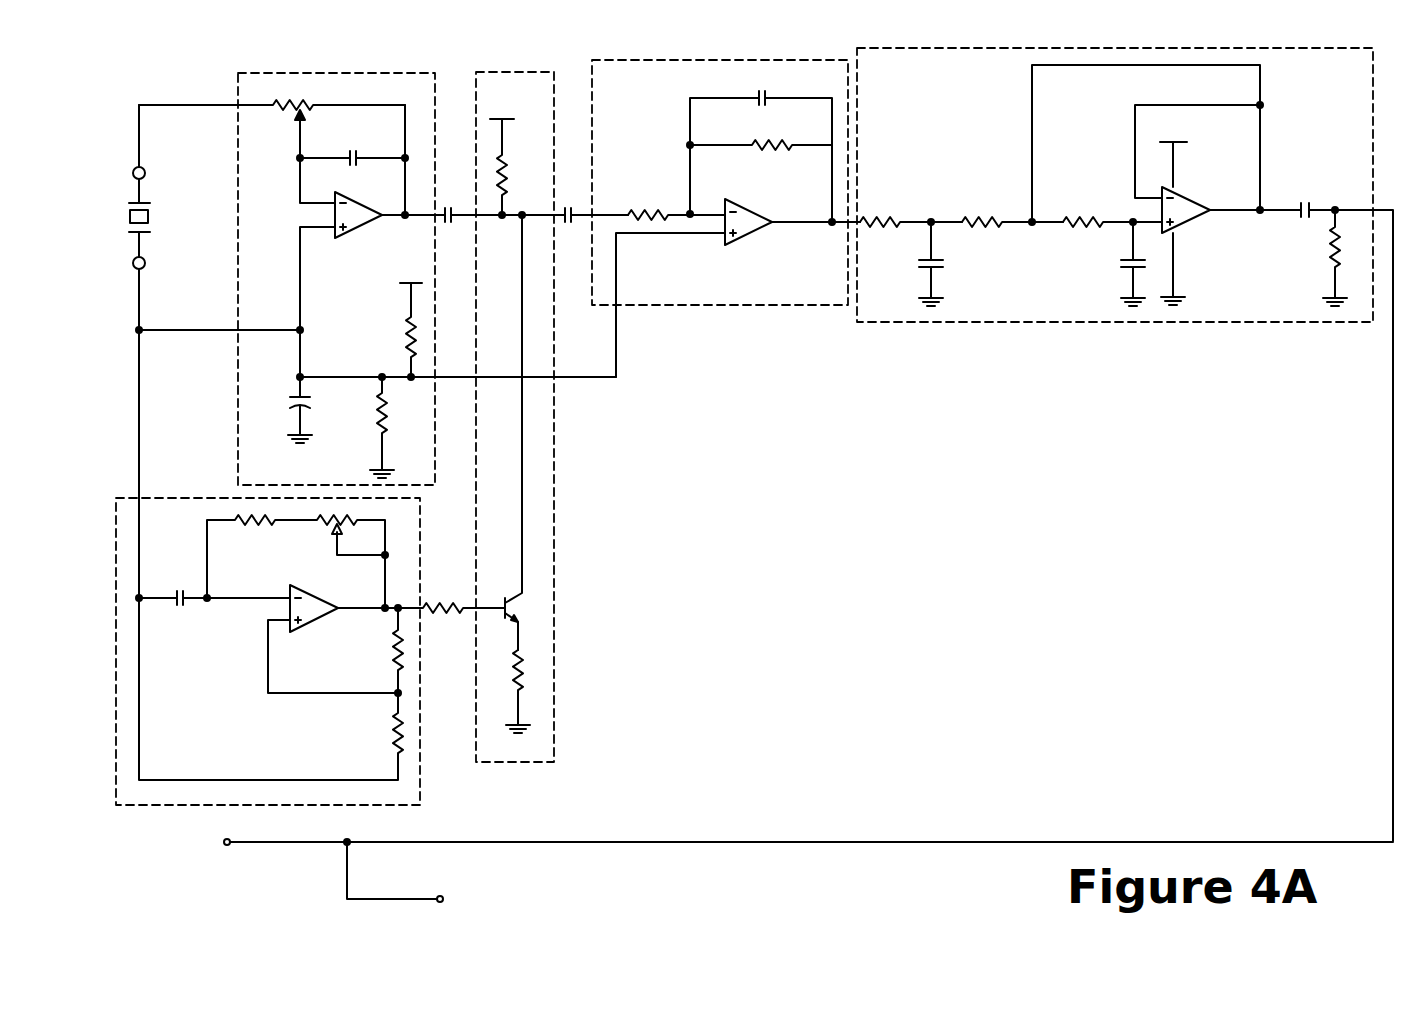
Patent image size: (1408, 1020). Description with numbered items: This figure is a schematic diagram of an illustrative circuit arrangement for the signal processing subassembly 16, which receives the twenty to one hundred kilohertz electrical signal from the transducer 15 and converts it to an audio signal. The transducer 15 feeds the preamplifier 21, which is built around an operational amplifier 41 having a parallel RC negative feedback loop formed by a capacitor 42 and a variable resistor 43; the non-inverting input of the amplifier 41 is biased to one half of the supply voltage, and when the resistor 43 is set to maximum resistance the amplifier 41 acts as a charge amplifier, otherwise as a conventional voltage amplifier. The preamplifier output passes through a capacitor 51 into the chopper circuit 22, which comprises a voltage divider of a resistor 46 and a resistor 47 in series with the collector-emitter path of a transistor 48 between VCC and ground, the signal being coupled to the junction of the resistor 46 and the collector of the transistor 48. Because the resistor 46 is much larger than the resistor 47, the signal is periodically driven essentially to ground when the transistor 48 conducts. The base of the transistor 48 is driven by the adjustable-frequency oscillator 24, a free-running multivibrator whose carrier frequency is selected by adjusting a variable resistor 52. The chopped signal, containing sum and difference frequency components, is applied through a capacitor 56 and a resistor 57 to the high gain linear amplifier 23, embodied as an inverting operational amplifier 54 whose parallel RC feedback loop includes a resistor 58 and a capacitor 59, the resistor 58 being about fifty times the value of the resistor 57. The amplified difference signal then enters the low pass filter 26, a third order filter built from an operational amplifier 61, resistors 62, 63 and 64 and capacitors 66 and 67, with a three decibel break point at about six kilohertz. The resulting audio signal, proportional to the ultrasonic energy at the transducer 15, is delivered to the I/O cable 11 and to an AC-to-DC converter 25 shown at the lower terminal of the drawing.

The I/O cable 11 is at (189, 857).
The transducer 15 is at (150, 216).
The signal processing subassembly 16 is at (146, 68).
The preamplifier 21 is at (430, 487).
The chopper circuit 22 is at (553, 748).
The high gain linear amplifier 23 is at (776, 307).
The adjustable-frequency oscillator 24 is at (420, 795).
The AC-to-DC converter 25 is at (468, 877).
The low pass filter 26 is at (888, 324).
The operational amplifier 41 is at (352, 204).
The capacitor 42 is at (354, 158).
The variable resistor 43 is at (288, 115).
The resistor 46 is at (504, 168).
The resistor 47 is at (532, 668).
The transistor 48 is at (512, 608).
The capacitor 51 is at (448, 204).
The variable resistor 52 is at (323, 526).
The inverting operational amplifier 54 is at (746, 215).
The capacitor 56 is at (568, 204).
The resistor 57 is at (655, 211).
The resistor 58 is at (785, 150).
The capacitor 59 is at (765, 105).
The operational amplifier 61 is at (1197, 232).
The resistor 62 is at (891, 215).
The resistor 63 is at (993, 214).
The resistor 64 is at (1095, 214).
The capacitor 66 is at (919, 260).
The capacitor 67 is at (1122, 260).